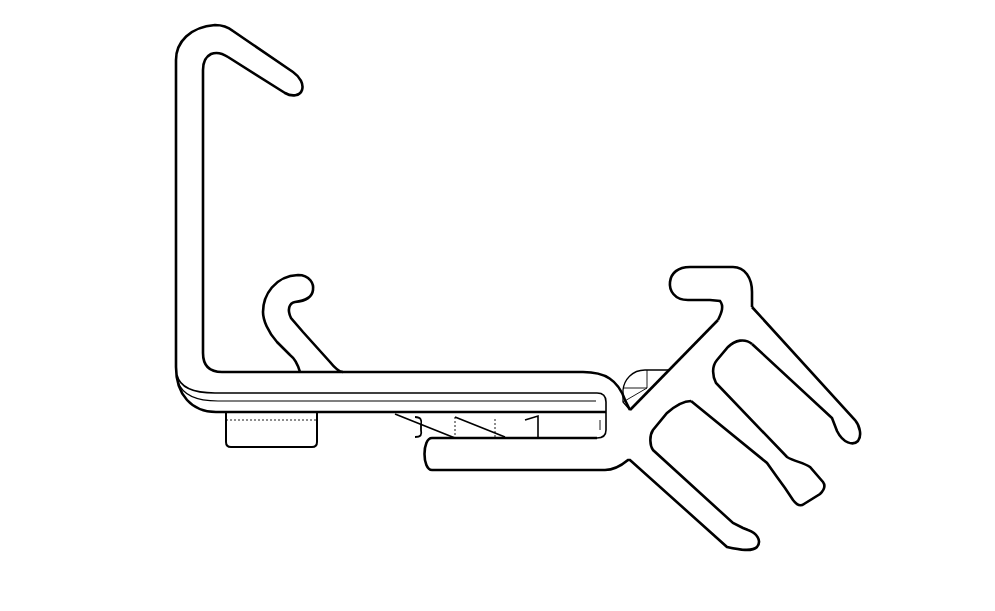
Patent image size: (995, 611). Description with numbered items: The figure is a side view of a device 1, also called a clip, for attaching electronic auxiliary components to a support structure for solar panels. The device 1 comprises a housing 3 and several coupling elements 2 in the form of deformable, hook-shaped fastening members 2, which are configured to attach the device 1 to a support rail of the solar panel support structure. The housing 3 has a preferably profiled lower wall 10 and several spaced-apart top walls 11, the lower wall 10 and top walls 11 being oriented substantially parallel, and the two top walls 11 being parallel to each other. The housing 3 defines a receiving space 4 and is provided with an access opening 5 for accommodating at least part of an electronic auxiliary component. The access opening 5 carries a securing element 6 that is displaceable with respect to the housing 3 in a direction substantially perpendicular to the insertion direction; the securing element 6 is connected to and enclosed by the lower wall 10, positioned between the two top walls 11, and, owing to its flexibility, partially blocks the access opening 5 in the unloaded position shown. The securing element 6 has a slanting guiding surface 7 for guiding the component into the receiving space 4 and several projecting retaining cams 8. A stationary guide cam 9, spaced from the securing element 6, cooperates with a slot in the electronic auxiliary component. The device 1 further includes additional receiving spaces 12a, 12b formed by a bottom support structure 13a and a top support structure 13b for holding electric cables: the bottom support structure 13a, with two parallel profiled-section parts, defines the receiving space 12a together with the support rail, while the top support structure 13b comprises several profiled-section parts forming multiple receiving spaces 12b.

The device 1 is at (763, 131).
The coupling element 2 is at (324, 261).
The housing 3 is at (438, 455).
The receiving space 4 is at (568, 440).
The access opening 5 is at (408, 428).
The securing element 6 is at (475, 428).
The slanting guiding surface 7 is at (387, 427).
The projecting retaining cam 8 is at (517, 422).
The stationary guide cam 9 is at (271, 445).
The lower wall 10 is at (552, 385).
The top wall 11 is at (478, 455).
The additional receiving space 12a is at (220, 176).
The additional receiving space 12b is at (848, 459).
The bottom support structure 13a is at (162, 148).
The top support structure 13b is at (829, 353).